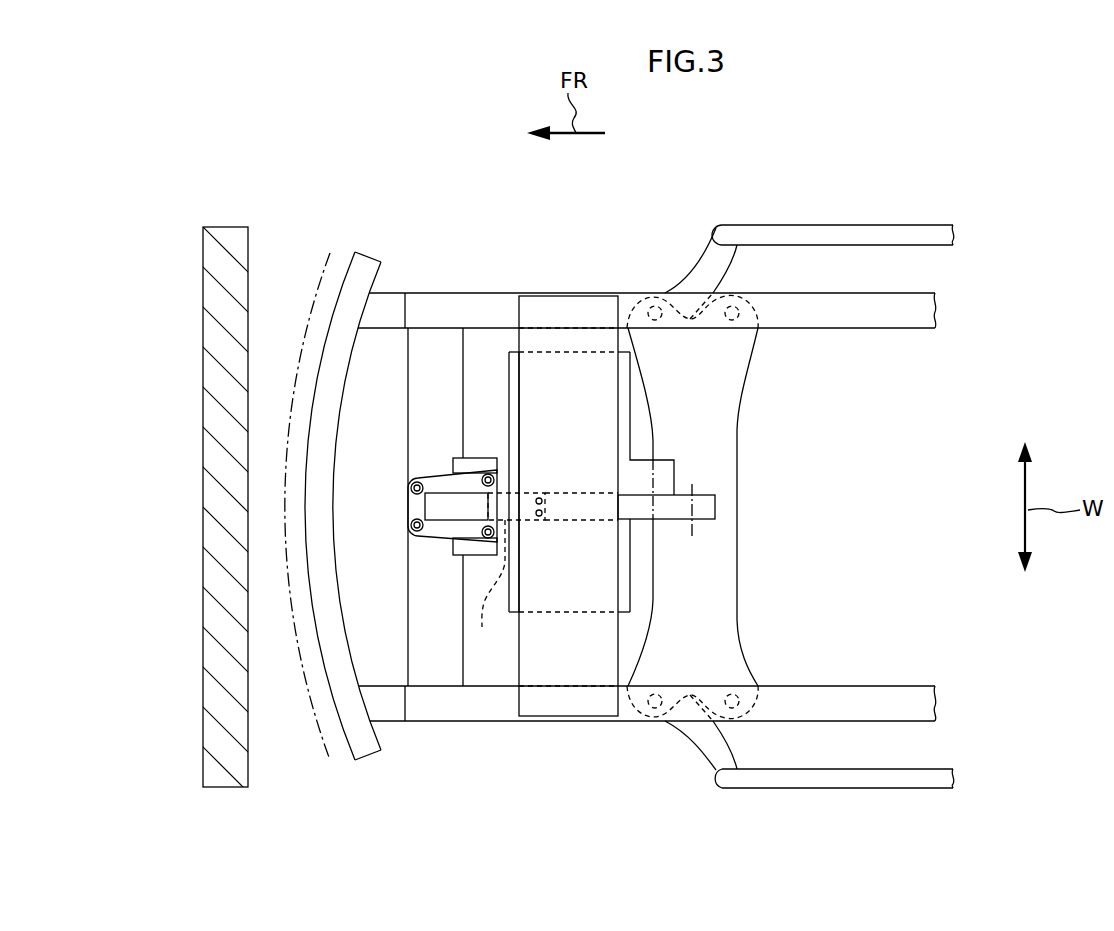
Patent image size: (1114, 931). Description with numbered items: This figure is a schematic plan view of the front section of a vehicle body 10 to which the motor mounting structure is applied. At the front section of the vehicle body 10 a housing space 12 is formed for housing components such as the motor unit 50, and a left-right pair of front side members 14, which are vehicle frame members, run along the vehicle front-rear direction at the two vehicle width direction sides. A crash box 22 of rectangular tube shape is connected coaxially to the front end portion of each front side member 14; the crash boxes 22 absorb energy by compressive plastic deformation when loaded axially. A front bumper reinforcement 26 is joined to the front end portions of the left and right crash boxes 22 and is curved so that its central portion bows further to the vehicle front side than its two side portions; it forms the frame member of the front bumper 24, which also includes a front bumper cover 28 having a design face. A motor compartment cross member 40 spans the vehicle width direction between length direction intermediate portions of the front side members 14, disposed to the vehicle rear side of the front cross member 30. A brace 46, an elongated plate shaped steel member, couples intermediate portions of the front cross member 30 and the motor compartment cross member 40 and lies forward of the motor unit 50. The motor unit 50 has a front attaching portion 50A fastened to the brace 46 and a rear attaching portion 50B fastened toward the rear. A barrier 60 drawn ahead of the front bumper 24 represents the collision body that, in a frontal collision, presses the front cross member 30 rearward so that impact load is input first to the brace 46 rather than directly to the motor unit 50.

The vehicle body 10 is at (632, 178).
The housing space 12 is at (497, 423).
The front side members 14 is at (483, 290).
The crash box 22 is at (380, 297).
The front bumper 24 is at (348, 472).
The front bumper reinforcement 26 is at (343, 392).
The front bumper cover 28 is at (288, 413).
The front cross member 30 is at (400, 548).
The motor compartment cross member 40 is at (555, 343).
The brace 46 is at (440, 531).
The motor unit 50 is at (500, 378).
The front attaching portion 50A is at (543, 575).
The rear attaching portion 50B is at (694, 486).
The barrier 60 is at (248, 262).